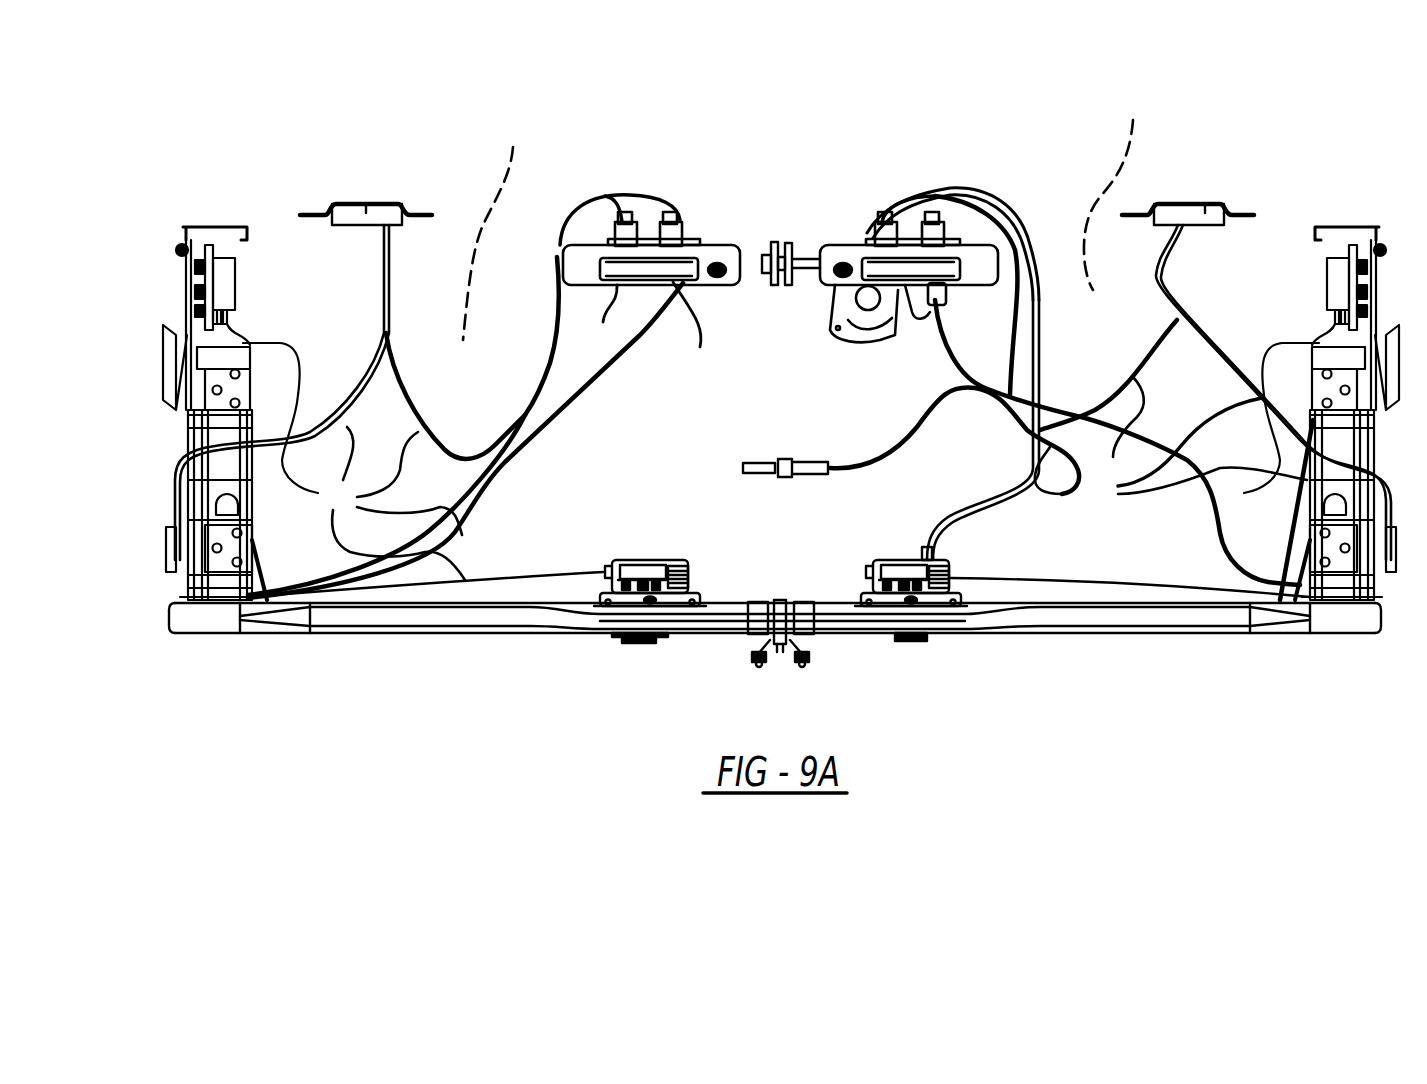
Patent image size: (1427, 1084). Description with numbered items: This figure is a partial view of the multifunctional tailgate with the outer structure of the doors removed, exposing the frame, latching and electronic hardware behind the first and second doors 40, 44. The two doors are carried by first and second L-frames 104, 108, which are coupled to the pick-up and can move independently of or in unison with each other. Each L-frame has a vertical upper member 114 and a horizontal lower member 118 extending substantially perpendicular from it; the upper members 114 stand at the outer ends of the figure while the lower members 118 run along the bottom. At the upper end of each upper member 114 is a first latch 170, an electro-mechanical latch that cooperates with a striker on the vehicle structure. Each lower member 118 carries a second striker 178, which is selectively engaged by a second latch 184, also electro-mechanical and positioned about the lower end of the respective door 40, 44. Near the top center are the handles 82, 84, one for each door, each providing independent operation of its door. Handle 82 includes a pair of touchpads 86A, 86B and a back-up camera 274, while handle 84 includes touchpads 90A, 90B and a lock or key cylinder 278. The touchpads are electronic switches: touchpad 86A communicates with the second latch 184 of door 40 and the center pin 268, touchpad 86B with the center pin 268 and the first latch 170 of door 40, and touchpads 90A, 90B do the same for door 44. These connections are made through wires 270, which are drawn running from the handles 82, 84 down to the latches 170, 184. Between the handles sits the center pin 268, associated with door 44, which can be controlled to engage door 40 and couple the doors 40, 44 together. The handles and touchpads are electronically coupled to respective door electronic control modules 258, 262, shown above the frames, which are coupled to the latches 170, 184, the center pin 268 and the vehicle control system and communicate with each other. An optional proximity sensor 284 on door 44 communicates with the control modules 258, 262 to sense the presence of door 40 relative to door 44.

The first door 40 is at (491, 227).
The second door 44 is at (1115, 187).
The handle 82 is at (722, 240).
The handle 84 is at (977, 242).
The touchpad 86A is at (597, 316).
The touchpad 86B is at (490, 440).
The touchpad 90A is at (940, 290).
The touchpad 90B is at (847, 287).
The first L-frame 104 is at (324, 690).
The second L-frame 108 is at (1284, 675).
The upper member 114 is at (777, 413).
The lower member 118 is at (441, 622).
The first latch 170 is at (223, 280).
The second striker 178 is at (625, 606).
The second latch 184 is at (648, 562).
The door electronic control module 258 is at (362, 216).
The door electronic control module 262 is at (1205, 213).
The center pin 268 is at (804, 258).
The wires 270 is at (783, 412).
The back-up camera 274 is at (722, 266).
The lock or key cylinder 278 is at (843, 262).
The proximity sensor 284 is at (828, 470).